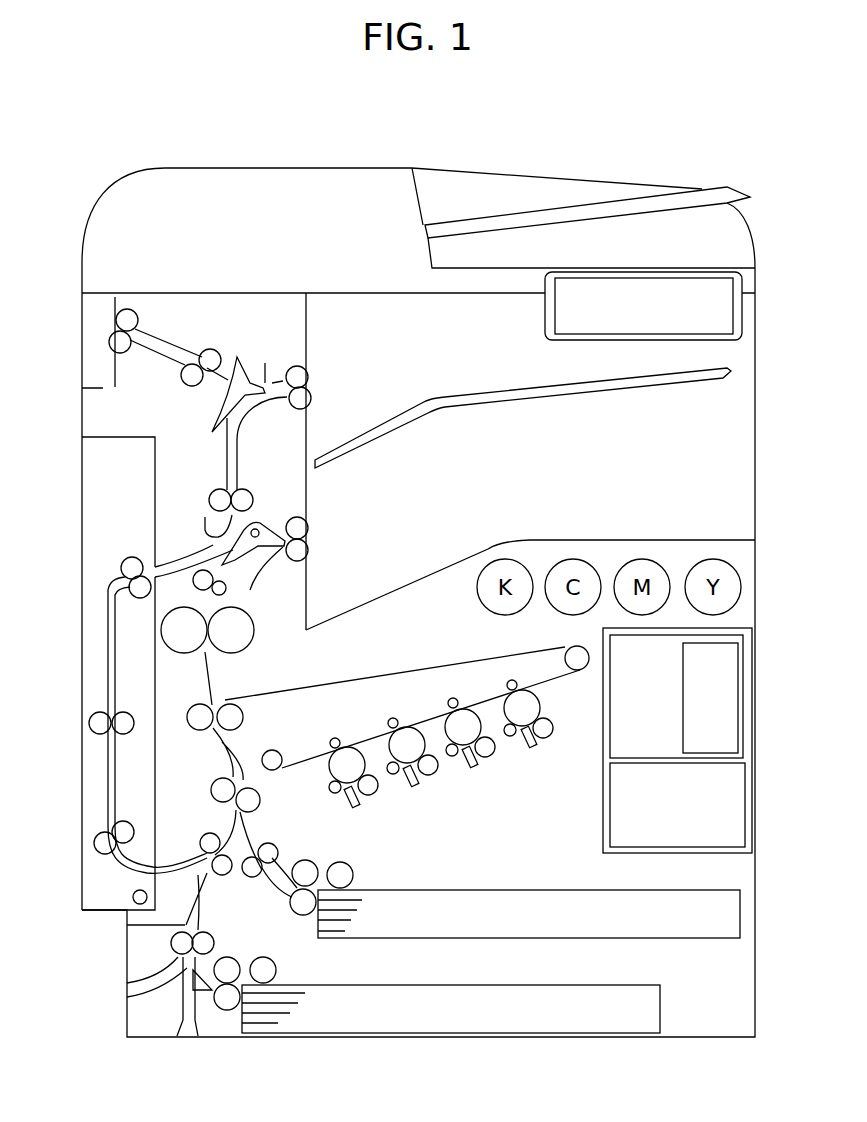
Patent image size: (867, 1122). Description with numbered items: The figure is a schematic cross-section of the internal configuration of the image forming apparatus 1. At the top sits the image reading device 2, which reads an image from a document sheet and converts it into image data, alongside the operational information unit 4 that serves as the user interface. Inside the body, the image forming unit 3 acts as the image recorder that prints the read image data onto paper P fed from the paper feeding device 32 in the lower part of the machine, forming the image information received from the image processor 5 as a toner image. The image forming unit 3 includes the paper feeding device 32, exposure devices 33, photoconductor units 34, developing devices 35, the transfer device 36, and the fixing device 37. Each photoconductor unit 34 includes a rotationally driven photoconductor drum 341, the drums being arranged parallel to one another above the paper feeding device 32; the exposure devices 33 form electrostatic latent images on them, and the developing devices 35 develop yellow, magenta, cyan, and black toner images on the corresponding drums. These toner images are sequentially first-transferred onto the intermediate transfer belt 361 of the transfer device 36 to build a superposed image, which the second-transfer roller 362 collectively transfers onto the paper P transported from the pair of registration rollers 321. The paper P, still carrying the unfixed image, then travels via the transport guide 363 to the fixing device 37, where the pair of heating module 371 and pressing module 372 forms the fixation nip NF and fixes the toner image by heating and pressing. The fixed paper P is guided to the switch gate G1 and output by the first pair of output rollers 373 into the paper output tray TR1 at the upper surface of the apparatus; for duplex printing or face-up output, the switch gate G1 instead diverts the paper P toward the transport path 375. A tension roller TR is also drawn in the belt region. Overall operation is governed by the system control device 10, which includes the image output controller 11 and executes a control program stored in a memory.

The image forming apparatus 1 is at (94, 170).
The image reading device 2 is at (273, 250).
The operational information unit 4 is at (652, 322).
The image forming unit 3 is at (466, 772).
The paper feeding device 32 is at (335, 866).
The exposure device 33 is at (537, 743).
The photoconductor unit 34 is at (500, 712).
The developing device 35 is at (552, 737).
The photoconductor drum 341 is at (521, 708).
The transfer device 36 is at (407, 684).
The intermediate transfer belt 361 is at (384, 678).
The tension roller TR is at (235, 740).
The second-transfer roller 362 is at (203, 725).
The transport guide 363 is at (212, 680).
The registration rollers 321 is at (258, 797).
The fixing device 37 is at (263, 607).
The heating module 371 is at (245, 648).
The pressing module 372 is at (190, 655).
The fixing nip NF is at (207, 612).
The first pair of output rollers 373 is at (312, 543).
The transport path 375 is at (222, 465).
The switch gate G1 is at (263, 530).
The paper output tray TR1 is at (463, 553).
The system control device 10 is at (652, 671).
The image output controller 11 is at (728, 715).
The image processor 5 is at (688, 819).
The paper P is at (491, 961).